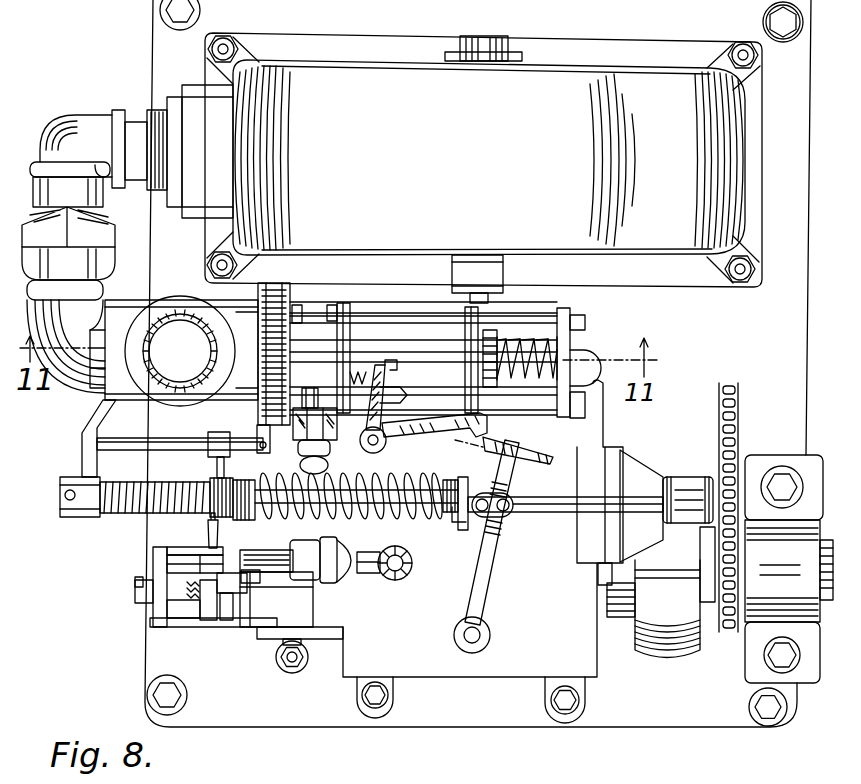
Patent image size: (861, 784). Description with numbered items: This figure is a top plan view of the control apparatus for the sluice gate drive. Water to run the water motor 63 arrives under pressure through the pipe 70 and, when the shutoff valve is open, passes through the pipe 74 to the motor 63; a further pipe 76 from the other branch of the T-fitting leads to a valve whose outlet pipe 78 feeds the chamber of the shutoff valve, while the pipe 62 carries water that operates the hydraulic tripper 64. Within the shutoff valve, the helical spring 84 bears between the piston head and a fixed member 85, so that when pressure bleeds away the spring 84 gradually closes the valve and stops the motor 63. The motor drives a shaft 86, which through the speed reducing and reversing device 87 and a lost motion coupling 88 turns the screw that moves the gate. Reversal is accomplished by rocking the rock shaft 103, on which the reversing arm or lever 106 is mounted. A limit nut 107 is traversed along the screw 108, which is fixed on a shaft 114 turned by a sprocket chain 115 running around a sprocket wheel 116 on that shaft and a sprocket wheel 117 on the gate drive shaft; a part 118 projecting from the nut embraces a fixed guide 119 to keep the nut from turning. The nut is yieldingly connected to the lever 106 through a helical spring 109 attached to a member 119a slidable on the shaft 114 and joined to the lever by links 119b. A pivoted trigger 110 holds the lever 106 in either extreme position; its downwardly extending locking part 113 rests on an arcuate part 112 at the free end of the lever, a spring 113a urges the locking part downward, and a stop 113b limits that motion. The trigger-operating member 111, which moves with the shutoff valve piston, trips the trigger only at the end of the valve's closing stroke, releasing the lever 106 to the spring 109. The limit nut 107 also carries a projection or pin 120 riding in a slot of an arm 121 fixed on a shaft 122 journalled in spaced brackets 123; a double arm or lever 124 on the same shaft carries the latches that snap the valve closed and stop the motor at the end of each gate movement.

The pipe 62 is at (393, 572).
The water motor 63 is at (483, 160).
The hydraulic tripper 64 is at (307, 584).
The pipe 70 is at (183, 320).
The pipe 74 is at (100, 263).
The pipe 76 is at (283, 673).
The pipe 78 is at (312, 425).
The helical spring 84 is at (518, 335).
The fixed member 85 is at (574, 339).
The shaft 86 is at (456, 302).
The speed reducing and reversing device 87 is at (517, 612).
The lost motion coupling 88 is at (656, 592).
The rock shaft 103 is at (455, 637).
The reversing arm or lever 106 is at (508, 550).
The limit nut 107 is at (200, 517).
The screw 108 is at (160, 488).
The helical spring 109 is at (372, 522).
The trigger 110 is at (390, 444).
The trigger-operating member 111 is at (378, 370).
The arcuate part 112 is at (527, 447).
The locking part 113 is at (487, 424).
The spring 113a is at (358, 367).
The stop 113b is at (380, 401).
The shaft 114 is at (530, 496).
The sprocket chain 115 is at (741, 416).
The sprocket wheel 116 is at (716, 488).
The sprocket wheel 117 is at (737, 571).
The part 118 is at (230, 471).
The fixed guide 119 is at (157, 437).
The member 119a is at (472, 528).
The links 119b is at (489, 493).
The projection or pin 120 is at (229, 538).
The arm 121 is at (160, 549).
The shaft 122 is at (150, 612).
The brackets 123 is at (200, 556).
The double arm or lever 124 is at (146, 600).